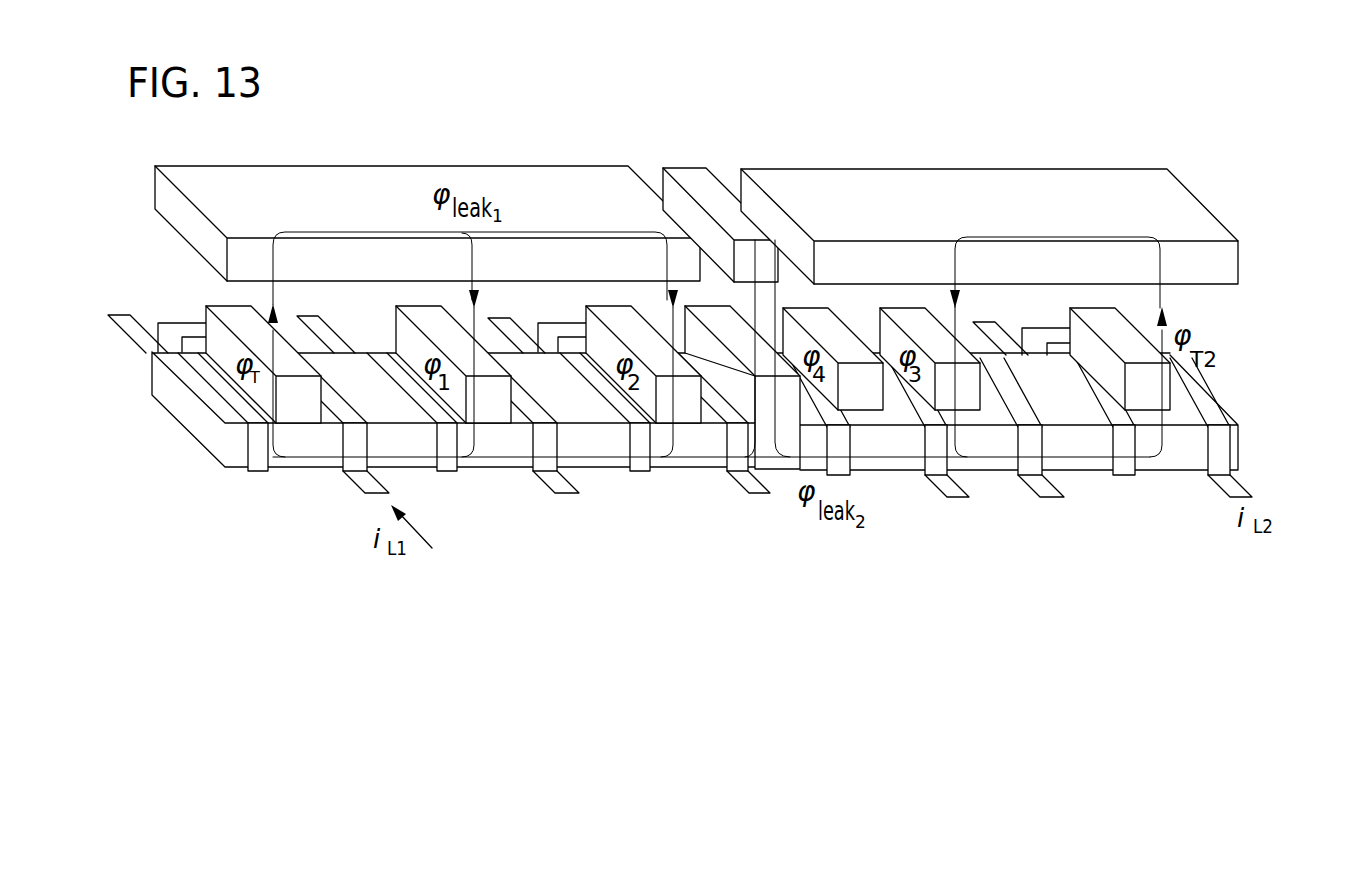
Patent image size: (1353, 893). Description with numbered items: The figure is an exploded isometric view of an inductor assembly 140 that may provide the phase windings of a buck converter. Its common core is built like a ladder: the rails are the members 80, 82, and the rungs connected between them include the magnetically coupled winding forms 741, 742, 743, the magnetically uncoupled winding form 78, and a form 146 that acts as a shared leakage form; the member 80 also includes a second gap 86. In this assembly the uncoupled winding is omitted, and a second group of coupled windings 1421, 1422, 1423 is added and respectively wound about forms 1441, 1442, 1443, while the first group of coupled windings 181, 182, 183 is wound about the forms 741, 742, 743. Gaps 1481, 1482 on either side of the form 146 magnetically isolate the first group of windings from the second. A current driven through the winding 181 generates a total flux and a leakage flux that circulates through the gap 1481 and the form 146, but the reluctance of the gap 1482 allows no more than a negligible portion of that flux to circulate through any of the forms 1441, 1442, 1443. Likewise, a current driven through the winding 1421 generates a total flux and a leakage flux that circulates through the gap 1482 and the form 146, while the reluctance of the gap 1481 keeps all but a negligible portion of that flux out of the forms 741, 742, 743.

The inductor assembly 140 is at (449, 127).
The member 80 is at (252, 180).
The form 146 is at (686, 168).
The second gap 86 is at (1142, 196).
The magnetically uncoupled winding form 78 is at (1168, 240).
The gap 1481 is at (647, 171).
The gap 1482 is at (725, 173).
The member 82 is at (182, 392).
The magnetically coupled winding form 741 is at (298, 395).
The magnetically coupled winding form 742 is at (493, 411).
The magnetically coupled winding form 743 is at (690, 401).
The form 1441 is at (852, 412).
The form 1442 is at (940, 412).
The form 1443 is at (1148, 415).
The coupled winding 181 is at (115, 312).
The coupled winding 182 is at (310, 312).
The coupled winding 183 is at (505, 316).
The coupled winding 1421 is at (958, 502).
The coupled winding 1422 is at (1051, 502).
The coupled winding 1423 is at (1242, 475).